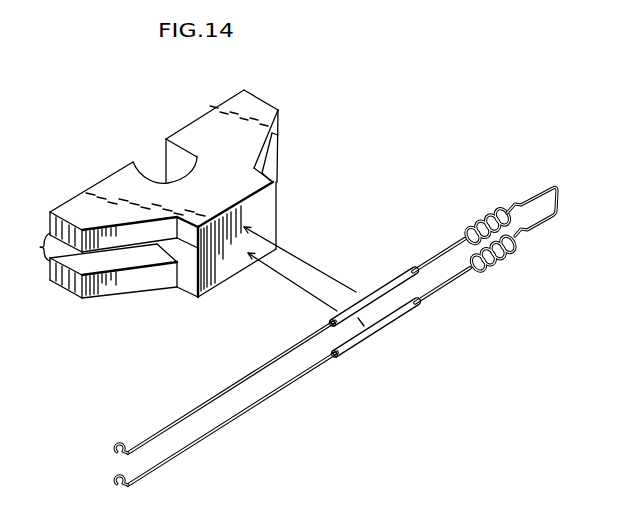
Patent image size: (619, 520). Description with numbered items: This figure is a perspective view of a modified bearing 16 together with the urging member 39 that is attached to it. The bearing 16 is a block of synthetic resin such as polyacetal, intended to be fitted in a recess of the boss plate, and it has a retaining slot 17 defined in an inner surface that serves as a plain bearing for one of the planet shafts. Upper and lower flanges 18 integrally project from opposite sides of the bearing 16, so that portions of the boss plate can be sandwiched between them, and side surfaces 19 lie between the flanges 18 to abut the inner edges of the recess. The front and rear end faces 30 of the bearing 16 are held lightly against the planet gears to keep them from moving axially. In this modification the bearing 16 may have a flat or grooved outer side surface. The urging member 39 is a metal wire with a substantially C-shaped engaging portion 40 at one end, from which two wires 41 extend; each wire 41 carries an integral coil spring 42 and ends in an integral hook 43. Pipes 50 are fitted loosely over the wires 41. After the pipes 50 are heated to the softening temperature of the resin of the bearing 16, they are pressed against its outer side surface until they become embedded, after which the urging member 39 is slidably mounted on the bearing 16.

The bearing 16 is at (223, 100).
The retaining slot 17 is at (192, 160).
The upper and lower flanges 18 is at (277, 136).
The side surfaces 19 is at (160, 247).
The front and rear end faces 30 is at (142, 182).
The urging member 39 is at (536, 191).
The engaging portion 40 is at (547, 196).
The wires 41 is at (236, 383).
The coil spring 42 is at (478, 228).
The hook 43 is at (113, 452).
The pipes 50 is at (383, 288).